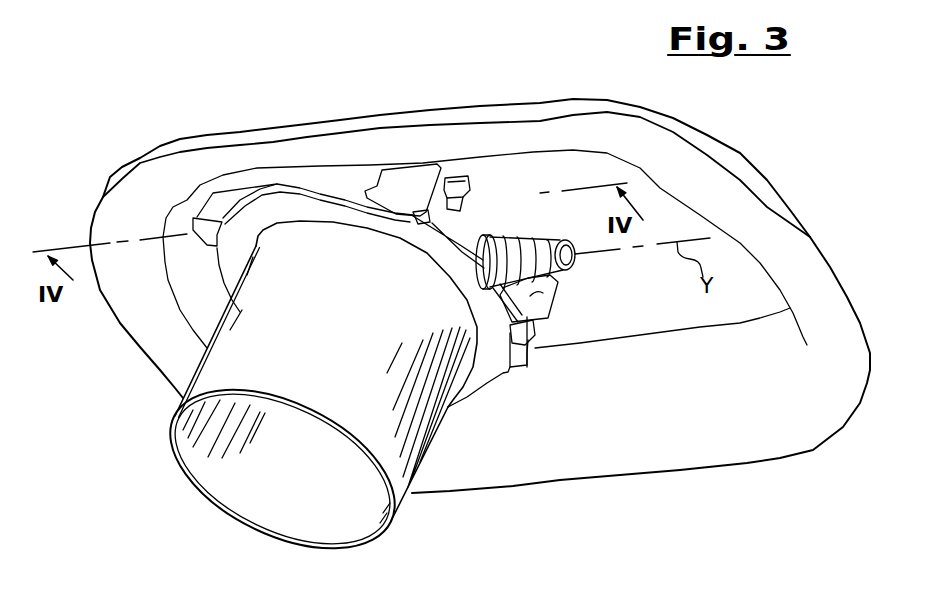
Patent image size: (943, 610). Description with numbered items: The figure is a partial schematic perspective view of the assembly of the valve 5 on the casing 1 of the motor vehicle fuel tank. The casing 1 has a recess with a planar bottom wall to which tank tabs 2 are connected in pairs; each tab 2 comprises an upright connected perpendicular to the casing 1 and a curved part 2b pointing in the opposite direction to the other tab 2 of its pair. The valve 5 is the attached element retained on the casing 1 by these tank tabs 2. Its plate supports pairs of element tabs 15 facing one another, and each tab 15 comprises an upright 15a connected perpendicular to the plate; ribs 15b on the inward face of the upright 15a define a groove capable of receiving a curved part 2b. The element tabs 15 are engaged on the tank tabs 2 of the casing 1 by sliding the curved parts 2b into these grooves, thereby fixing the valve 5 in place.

The casing 1 is at (530, 510).
The tab 2 is at (473, 184).
The curved part 2b is at (447, 210).
The valve 5 is at (203, 520).
The tab 15 is at (384, 178).
The upright 15a is at (405, 188).
The bracket engaging tab 15b is at (455, 180).